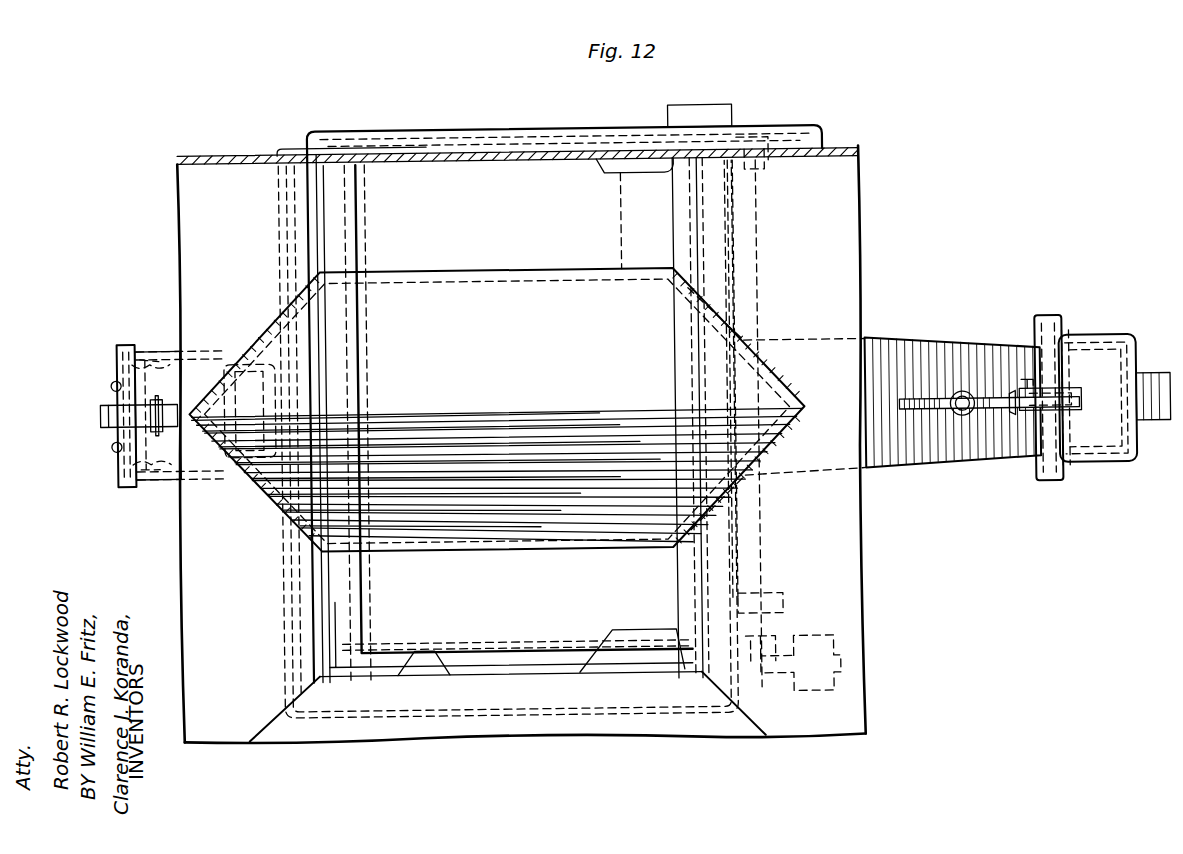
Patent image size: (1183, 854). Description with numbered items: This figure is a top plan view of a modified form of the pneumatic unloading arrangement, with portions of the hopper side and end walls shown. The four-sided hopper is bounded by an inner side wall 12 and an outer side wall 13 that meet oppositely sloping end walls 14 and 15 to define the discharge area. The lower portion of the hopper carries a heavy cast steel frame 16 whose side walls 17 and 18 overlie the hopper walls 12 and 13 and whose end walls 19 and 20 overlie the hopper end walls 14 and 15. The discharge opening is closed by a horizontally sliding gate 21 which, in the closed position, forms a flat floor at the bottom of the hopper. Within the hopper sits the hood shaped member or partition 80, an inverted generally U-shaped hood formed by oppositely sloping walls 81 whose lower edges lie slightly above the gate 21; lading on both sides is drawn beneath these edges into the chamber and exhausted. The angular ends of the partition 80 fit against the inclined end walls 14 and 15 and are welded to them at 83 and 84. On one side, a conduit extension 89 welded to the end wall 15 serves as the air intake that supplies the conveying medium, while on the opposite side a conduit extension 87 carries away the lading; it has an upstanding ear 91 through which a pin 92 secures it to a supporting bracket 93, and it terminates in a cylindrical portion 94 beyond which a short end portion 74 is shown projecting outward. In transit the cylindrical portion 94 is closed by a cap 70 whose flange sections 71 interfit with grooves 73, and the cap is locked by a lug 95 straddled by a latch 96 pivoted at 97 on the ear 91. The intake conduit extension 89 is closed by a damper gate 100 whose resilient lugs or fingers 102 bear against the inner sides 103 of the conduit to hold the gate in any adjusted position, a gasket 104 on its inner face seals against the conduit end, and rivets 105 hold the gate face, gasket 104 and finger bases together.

The inner side wall 12 is at (851, 150).
The outer side wall 13 is at (680, 722).
The end wall 14 is at (450, 92).
The end wall 15 is at (519, 82).
The frame 16 is at (298, 115).
The side wall of frame 17 is at (580, 150).
The side wall of frame 18 is at (576, 700).
The end wall of frame 19 is at (724, 262).
The end wall of frame 20 is at (284, 257).
The horizontally sliding gate 21 is at (541, 628).
The cap 70 is at (1095, 470).
The flange sections 71 is at (1066, 368).
The grooves 73 is at (1049, 330).
The shaft stub 74 is at (1142, 366).
The hood shaped member or partition 80 is at (503, 236).
The oppositely sloping walls 81 is at (497, 409).
The weld 83 is at (742, 330).
The weld 84 is at (270, 323).
The conduit extension 87 is at (960, 483).
The conduit extension 89 is at (173, 324).
The upstanding ear 91 is at (986, 383).
The pin 92 is at (958, 397).
The bracket 93 is at (933, 431).
The cylindrical portion 94 is at (1088, 342).
The lug 95 is at (1030, 410).
The latch 96 is at (1082, 404).
The pivot 97 is at (1023, 380).
The damper gate 100 is at (118, 356).
The resilient lugs or fingers 102 is at (146, 488).
The inner sides 103 is at (191, 357).
The gasket 104 is at (118, 345).
The rivets 105 is at (111, 380).